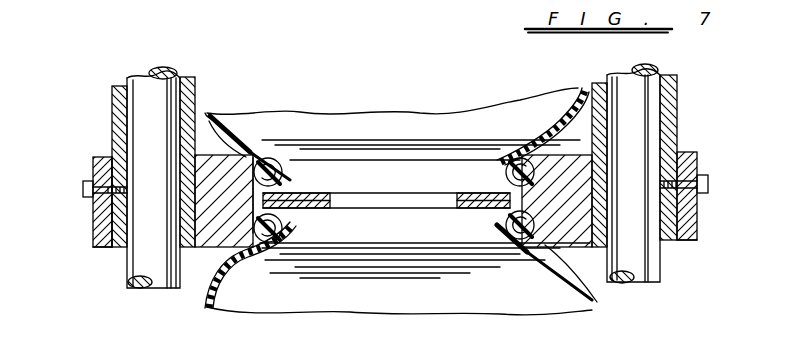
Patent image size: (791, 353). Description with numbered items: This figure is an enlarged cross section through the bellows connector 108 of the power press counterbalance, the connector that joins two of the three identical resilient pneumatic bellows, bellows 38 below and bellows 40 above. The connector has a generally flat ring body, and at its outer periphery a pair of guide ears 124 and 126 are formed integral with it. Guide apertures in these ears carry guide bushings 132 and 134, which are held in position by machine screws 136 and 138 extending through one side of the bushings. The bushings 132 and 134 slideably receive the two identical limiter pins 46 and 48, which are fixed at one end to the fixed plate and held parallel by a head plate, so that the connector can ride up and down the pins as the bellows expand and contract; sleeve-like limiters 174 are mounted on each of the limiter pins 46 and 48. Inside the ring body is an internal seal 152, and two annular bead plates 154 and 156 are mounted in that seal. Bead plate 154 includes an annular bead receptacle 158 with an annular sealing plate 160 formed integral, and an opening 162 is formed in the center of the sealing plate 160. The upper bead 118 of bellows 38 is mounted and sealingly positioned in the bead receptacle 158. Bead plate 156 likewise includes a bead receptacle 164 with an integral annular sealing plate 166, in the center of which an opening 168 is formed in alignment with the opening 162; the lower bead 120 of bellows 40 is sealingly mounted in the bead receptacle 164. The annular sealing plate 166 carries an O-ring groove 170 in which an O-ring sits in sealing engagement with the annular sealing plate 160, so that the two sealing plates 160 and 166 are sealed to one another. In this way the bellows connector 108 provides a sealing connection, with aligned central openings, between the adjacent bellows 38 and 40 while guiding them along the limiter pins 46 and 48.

The resilient pneumatic bellows 38 is at (600, 302).
The resilient pneumatic bellows 40 is at (205, 117).
The limiter pin 46 is at (137, 100).
The limiter pin 48 is at (647, 102).
The bellows connector 108 is at (100, 222).
The upper bead 118 is at (267, 250).
The lower bead 120 is at (213, 178).
The guide ear 124 is at (103, 241).
The guide ear 126 is at (687, 157).
The guide bushing 132 is at (113, 208).
The guide bushing 134 is at (670, 233).
The machine screw 136 is at (88, 189).
The machine screw 138 is at (709, 183).
The internal seal 152 is at (548, 240).
The annular bead plate 154 is at (250, 222).
The annular bead plate 156 is at (250, 154).
The annular bead receptacle 158 is at (287, 219).
The annular sealing plate 160 is at (322, 210).
The opening 162 is at (441, 208).
The bead receptacle 164 is at (287, 193).
The annular sealing plate 166 is at (312, 194).
The opening 168 is at (384, 195).
The O-ring groove 170 is at (293, 195).
The limiter 174 is at (119, 118).